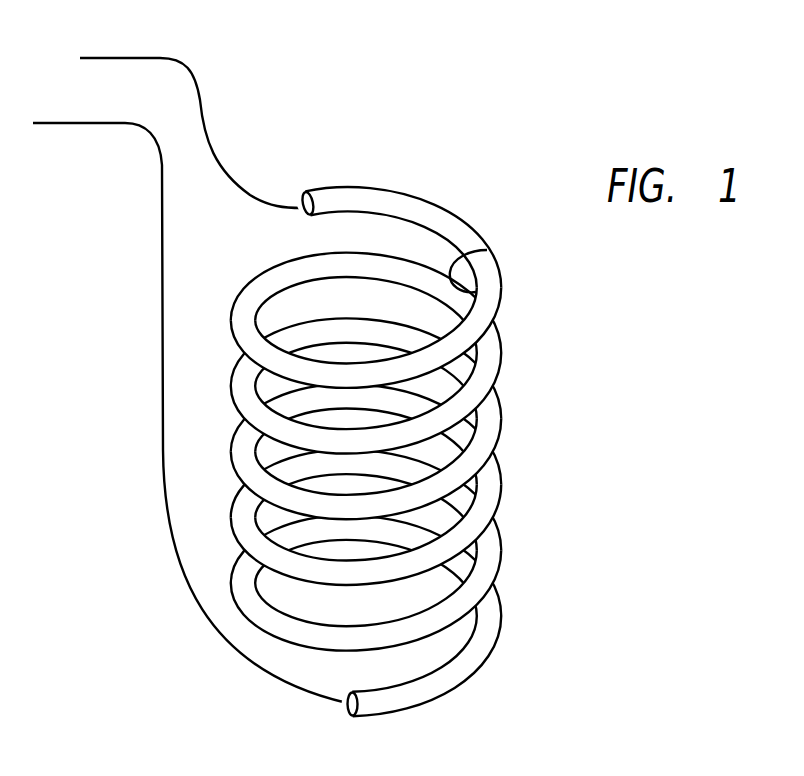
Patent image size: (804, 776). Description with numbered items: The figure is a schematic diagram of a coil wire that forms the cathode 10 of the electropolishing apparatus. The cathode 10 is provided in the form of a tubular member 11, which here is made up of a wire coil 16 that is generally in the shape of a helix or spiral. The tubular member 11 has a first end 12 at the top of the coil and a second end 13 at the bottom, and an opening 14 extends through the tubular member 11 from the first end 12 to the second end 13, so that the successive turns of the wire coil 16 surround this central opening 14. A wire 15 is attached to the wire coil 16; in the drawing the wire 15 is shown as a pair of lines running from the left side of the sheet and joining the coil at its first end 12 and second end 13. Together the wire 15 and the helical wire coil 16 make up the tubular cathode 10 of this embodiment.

The cathode 10 is at (437, 399).
The tubular member 11 is at (502, 557).
The first end 12 is at (421, 199).
The second end 13 is at (457, 683).
The opening 14 is at (487, 250).
The wire 15 is at (188, 72).
The wire coil 16 is at (528, 480).